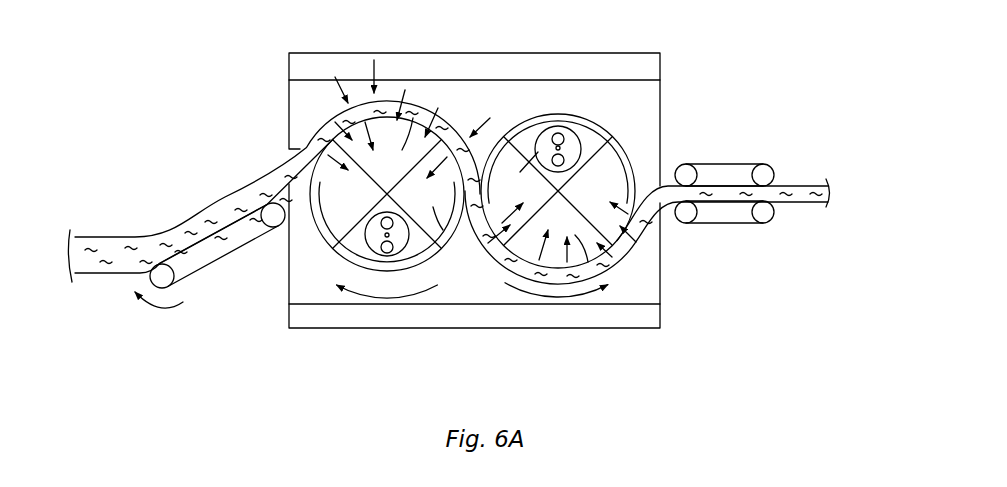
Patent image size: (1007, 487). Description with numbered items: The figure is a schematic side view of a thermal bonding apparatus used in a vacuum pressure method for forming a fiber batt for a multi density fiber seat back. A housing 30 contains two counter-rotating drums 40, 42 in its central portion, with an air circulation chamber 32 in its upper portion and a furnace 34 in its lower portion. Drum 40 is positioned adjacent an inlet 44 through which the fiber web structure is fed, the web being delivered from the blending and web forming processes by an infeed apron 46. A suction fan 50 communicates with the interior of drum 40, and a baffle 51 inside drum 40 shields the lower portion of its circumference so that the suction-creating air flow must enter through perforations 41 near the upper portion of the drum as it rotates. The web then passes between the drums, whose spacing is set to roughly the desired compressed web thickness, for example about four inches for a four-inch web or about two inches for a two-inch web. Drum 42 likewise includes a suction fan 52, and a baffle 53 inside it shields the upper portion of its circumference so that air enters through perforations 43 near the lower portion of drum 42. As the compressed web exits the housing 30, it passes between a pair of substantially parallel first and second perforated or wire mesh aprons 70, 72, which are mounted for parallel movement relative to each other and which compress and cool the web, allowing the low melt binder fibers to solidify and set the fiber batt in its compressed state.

The housing 30 is at (662, 100).
The air circulation chamber 32 is at (488, 55).
The furnace 34 is at (474, 326).
The drum 40 is at (325, 237).
The perforations 41 is at (387, 148).
The drum 42 is at (630, 157).
The perforations 43 is at (562, 232).
The inlet 44 is at (300, 154).
The infeed apron 46 is at (203, 268).
The suction fan 50 is at (366, 233).
The baffle 51 is at (429, 204).
The suction fan 52 is at (516, 174).
The baffle 53 is at (609, 134).
The first perforated apron 70 is at (745, 163).
The second perforated apron 72 is at (743, 224).